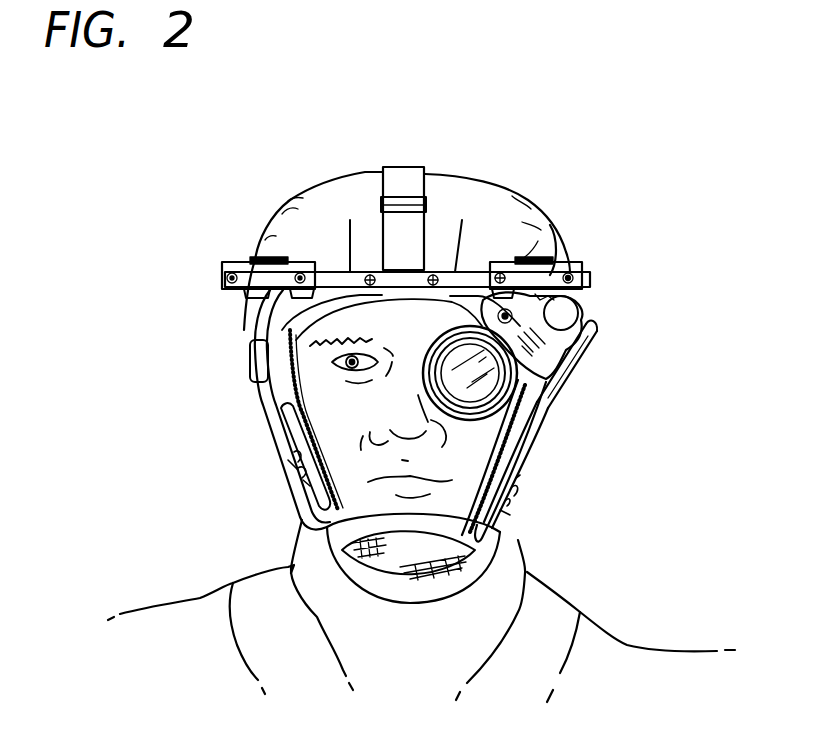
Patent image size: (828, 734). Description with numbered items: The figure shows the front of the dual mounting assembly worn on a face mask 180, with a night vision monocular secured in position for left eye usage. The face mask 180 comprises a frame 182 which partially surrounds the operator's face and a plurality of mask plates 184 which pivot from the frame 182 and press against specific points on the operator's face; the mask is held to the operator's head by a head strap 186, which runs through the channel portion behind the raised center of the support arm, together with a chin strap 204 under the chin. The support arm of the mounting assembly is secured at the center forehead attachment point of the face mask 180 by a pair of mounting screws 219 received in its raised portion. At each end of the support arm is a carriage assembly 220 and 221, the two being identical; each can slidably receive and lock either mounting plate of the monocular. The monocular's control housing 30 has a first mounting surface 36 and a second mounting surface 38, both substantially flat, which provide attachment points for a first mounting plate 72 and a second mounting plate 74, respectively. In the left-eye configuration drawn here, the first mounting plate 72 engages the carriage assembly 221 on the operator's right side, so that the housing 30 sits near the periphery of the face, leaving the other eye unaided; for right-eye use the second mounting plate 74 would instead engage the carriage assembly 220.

The control housing 30 is at (558, 414).
The first mounting surface 36 is at (575, 278).
The second mounting surface 38 is at (576, 357).
The first mounting plate 72 is at (552, 262).
The second mounting plate 74 is at (588, 345).
The face mask 180 is at (266, 511).
The frame 182 is at (258, 392).
The mask plates 184 is at (278, 432).
The head strap 186 is at (406, 175).
The chin strap 204 is at (462, 574).
The mounting screws 219 is at (350, 272).
The carriage assembly 220 is at (238, 262).
The carriage assembly 221 is at (546, 275).